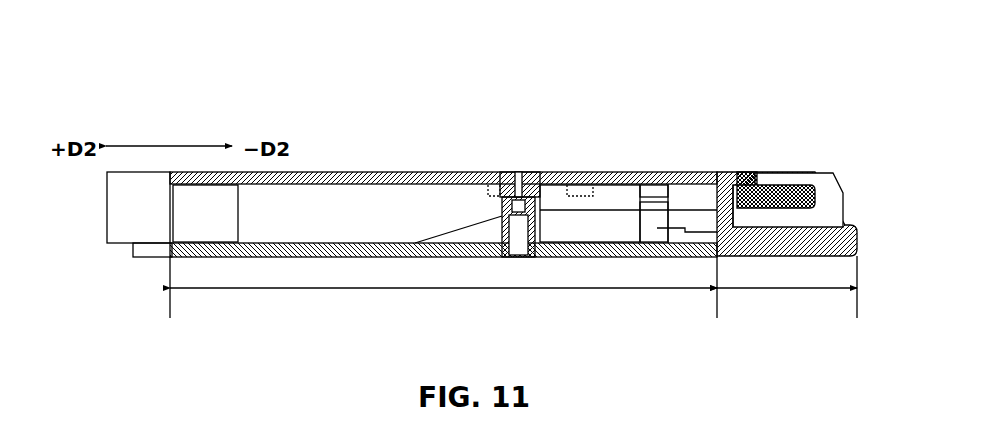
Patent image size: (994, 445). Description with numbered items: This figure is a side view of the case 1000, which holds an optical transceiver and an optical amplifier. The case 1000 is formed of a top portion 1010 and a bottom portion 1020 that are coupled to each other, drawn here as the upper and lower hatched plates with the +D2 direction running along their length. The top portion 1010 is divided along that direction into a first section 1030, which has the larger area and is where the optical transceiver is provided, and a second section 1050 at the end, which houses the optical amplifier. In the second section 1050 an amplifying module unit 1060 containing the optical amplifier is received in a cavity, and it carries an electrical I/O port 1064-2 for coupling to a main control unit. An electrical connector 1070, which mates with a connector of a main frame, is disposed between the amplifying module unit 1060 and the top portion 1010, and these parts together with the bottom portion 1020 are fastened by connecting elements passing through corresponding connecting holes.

The case 1000 is at (138, 93).
The top portion 1010 is at (293, 257).
The bottom portion 1020 is at (340, 172).
The first section 1030 is at (390, 290).
The second section 1050 is at (790, 290).
The amplifying module unit 1060 is at (735, 258).
The electrical I/O port 1064-2 is at (713, 228).
The electrical connector 1070 is at (615, 172).